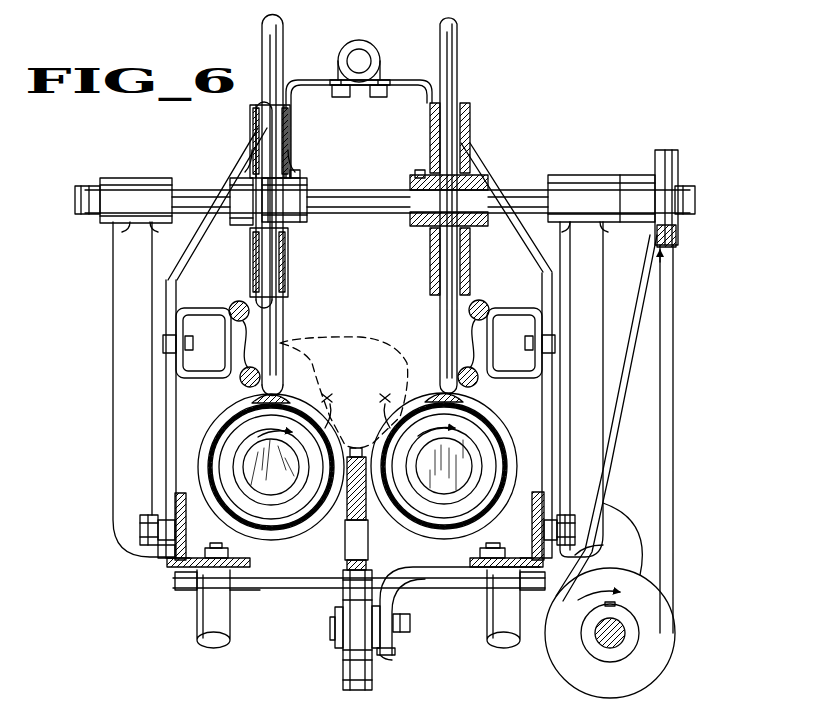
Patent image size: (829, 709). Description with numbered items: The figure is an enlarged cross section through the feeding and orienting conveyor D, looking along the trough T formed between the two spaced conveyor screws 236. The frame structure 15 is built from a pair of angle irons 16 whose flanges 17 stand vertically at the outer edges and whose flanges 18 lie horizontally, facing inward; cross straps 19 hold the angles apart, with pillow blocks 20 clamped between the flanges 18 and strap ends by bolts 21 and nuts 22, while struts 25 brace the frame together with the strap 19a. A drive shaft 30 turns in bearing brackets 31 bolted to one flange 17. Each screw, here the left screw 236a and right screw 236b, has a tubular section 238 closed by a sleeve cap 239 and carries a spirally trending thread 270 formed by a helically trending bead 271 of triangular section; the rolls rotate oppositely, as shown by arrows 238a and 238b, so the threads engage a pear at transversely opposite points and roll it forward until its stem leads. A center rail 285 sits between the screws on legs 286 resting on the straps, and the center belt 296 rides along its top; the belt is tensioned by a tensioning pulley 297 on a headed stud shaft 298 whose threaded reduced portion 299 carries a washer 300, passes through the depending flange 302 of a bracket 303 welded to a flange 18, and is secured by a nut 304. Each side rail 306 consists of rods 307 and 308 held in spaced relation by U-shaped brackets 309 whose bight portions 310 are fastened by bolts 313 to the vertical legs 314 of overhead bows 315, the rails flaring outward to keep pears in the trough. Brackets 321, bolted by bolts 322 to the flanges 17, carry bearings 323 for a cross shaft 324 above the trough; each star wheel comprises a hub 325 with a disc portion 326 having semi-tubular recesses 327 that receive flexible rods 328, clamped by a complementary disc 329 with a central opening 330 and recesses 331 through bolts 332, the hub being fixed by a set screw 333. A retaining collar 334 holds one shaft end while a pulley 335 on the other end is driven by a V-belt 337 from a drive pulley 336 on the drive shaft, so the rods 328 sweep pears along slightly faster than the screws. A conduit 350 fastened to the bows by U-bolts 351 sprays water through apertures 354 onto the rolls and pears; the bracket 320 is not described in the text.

The frame structure 15 is at (170, 545).
The angle irons 16 is at (176, 563).
The flanges 17 is at (180, 520).
The flanges 18 is at (250, 561).
The cross straps 19 is at (312, 586).
The strap 19a is at (266, 588).
The pillow blocks 20 is at (182, 586).
The bolts 21 is at (352, 537).
The nut 22 is at (228, 554).
The struts 25 is at (200, 630).
The drive shaft 30 is at (618, 637).
The bearing brackets 31 is at (596, 559).
The conveyor screws 236 is at (232, 424).
The screw 236a is at (408, 502).
The screw 236b is at (288, 520).
The tubular section 238 is at (218, 440).
The arrow 238a is at (458, 427).
The arrow 238b is at (258, 429).
The sleeve cap 239 is at (234, 505).
The spirally trending thread 270 is at (326, 440).
The helically trending bead 271 is at (255, 390).
The center rail 285 is at (347, 503).
The legs 286 is at (368, 546).
The center belt 296 is at (365, 460).
The tensioning pulley 297 is at (342, 669).
The headed stud shaft 298 is at (334, 632).
The reduced portion 299 is at (411, 624).
The washer 300 is at (383, 660).
The depending flange 302 is at (394, 654).
The bracket 303 is at (410, 578).
The nut 304 is at (400, 636).
The side rail 306 is at (263, 366).
The rod 307 is at (235, 304).
The rod 308 is at (242, 371).
The U-shaped brackets 309 is at (180, 372).
The bight portions 310 is at (165, 340).
The bolts 313 is at (193, 345).
The vertical legs 314 is at (170, 423).
The overhead bows 315 is at (485, 168).
The lifting frame 320 is at (440, 30).
The brackets 321 is at (137, 290).
The bolts 322 is at (143, 530).
The bearings 323 is at (132, 185).
The cross shaft 324 is at (350, 190).
The hub 325 is at (307, 212).
The disc portion 326 is at (260, 240).
The semi-tubular recesses 327 is at (471, 113).
The rods 328 is at (262, 42).
The complementary disc 329 is at (290, 266).
The central opening 330 is at (432, 226).
The semi-tubular recesses 331 is at (430, 128).
The bolts 332 is at (248, 200).
The set screw 333 is at (298, 171).
The retaining collar 334 is at (95, 220).
The pulley 335 is at (678, 172).
The drive pulley 336 is at (625, 680).
The V-belt 337 is at (668, 443).
The conduit 350 is at (378, 56).
The U-bolts 351 is at (336, 60).
The apertures 354 is at (361, 86).
The feeding and orienting conveyor D is at (294, 402).
The trough T is at (355, 425).